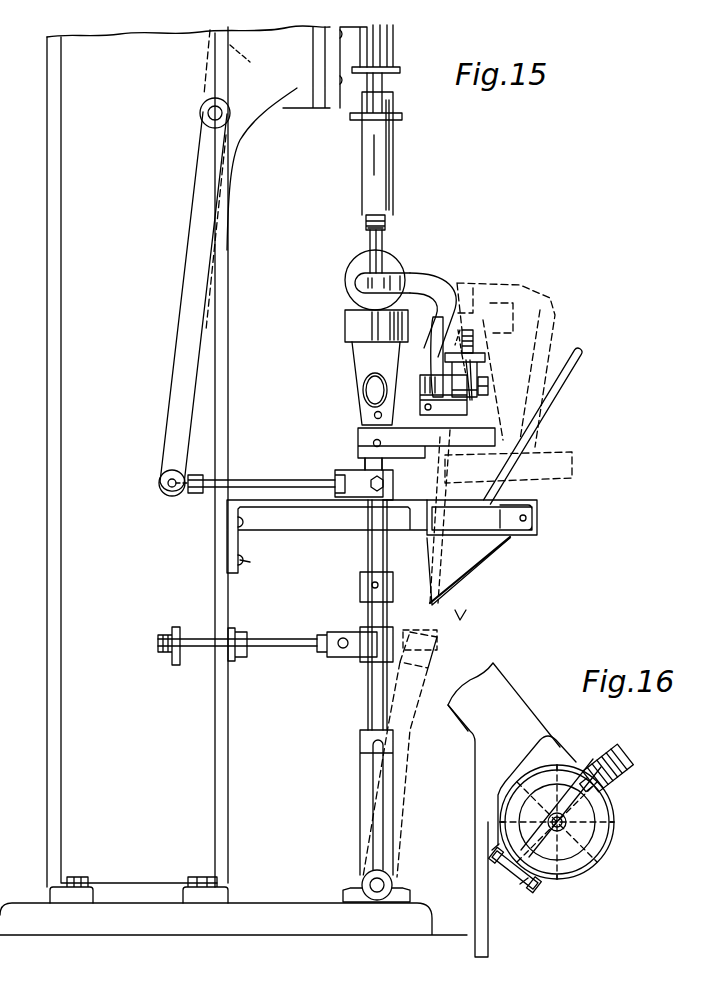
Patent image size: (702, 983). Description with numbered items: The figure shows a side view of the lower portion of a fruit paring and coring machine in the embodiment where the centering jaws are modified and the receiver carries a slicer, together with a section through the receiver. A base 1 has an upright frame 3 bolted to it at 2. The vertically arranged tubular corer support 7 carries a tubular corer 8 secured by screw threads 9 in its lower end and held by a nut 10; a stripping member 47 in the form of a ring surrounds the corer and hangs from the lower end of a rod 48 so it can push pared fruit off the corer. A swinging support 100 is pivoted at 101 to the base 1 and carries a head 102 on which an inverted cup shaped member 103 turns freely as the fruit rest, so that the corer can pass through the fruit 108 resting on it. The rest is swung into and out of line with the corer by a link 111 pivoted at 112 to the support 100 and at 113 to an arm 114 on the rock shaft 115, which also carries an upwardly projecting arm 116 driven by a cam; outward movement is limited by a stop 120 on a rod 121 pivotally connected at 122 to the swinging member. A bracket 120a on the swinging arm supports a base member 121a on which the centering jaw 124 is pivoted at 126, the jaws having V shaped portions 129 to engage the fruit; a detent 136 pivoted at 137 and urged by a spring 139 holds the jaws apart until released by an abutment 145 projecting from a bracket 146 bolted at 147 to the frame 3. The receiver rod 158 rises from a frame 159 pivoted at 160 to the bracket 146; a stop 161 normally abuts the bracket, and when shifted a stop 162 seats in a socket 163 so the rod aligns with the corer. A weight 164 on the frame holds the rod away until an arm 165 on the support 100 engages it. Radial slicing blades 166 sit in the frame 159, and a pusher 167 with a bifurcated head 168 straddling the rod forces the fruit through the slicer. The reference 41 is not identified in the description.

In FIG. 15, the base 1 is at (173, 935).
In FIG. 15, the bolts 2 is at (75, 877).
In FIG. 15, the upright frame 3 is at (73, 445).
In FIG. 15, the tubular corer support 7 is at (393, 152).
In FIG. 15, the tubular corer 8 is at (383, 240).
In FIG. 15, the screw threads 9 is at (366, 228).
In FIG. 15, the nut 10 is at (385, 225).
In FIG. 15, the arm 41 is at (290, 90).
In FIG. 15, the stripping member 47 is at (402, 117).
In FIG. 15, the rod 48 is at (400, 55).
In FIG. 15, the swinging support 100 is at (366, 693).
In FIG. 15, the pivot 101 is at (362, 875).
In FIG. 15, the head 102 is at (360, 352).
In FIG. 15, the inverted cup shaped member 103 is at (345, 325).
In FIG. 15, the fruit 108 is at (360, 262).
In FIG. 15, the link 111 is at (275, 484).
In FIG. 15, the pivot 112 is at (355, 472).
In FIG. 15, the pivot 113 is at (166, 496).
In FIG. 15, the arm 114 is at (182, 370).
In FIG. 15, the rock shaft 115 is at (202, 108).
In FIG. 15, the arm 116 is at (253, 58).
In FIG. 15, the stop 120 is at (178, 628).
In FIG. 15, the bracket 120a is at (413, 445).
In FIG. 15, the rod 121 is at (268, 648).
In FIG. 15, the base member 121a is at (412, 425).
In FIG. 15, the pivotal connection 122 is at (343, 635).
In FIG. 15, the centering jaw 124 is at (420, 305).
In FIG. 15, the pivot 126 is at (488, 380).
In FIG. 15, the V shaped portions 129 is at (404, 270).
In FIG. 15, the detent 136 is at (485, 356).
In FIG. 15, the pivot 137 is at (473, 338).
In FIG. 15, the spring 139 is at (500, 330).
In FIG. 15, the abutment 145 is at (582, 357).
In FIG. 16, the abutment 145 is at (487, 938).
In FIG. 15, the bracket 146 is at (328, 540).
In FIG. 16, the bracket 146 is at (515, 695).
In FIG. 15, the bolts 147 is at (245, 560).
In FIG. 15, the receiver rod 158 is at (465, 325).
In FIG. 16, the receiver rod 158 is at (575, 830).
In FIG. 15, the frame 159 is at (537, 510).
In FIG. 16, the frame 159 is at (560, 745).
In FIG. 15, the pivot 160 is at (535, 520).
In FIG. 16, the pivot 160 is at (515, 890).
In FIG. 16, the stop 161 is at (535, 888).
In FIG. 16, the stop 162 is at (492, 850).
In FIG. 15, the socket 163 is at (515, 540).
In FIG. 15, the weight 164 is at (460, 565).
In FIG. 15, the arm 165 is at (468, 612).
In FIG. 16, the slicing blades 166 is at (575, 862).
In FIG. 16, the pusher 167 is at (620, 762).
In FIG. 16, the head 168 is at (575, 822).